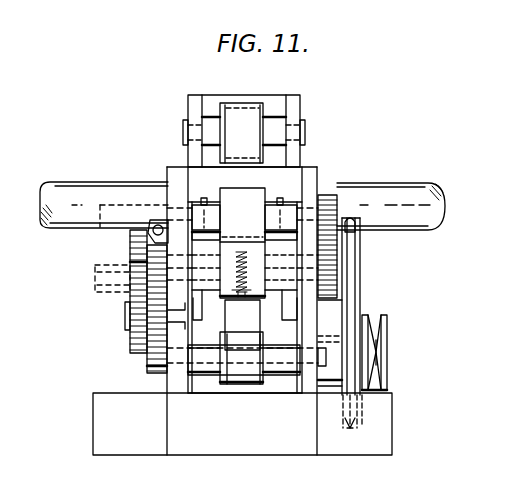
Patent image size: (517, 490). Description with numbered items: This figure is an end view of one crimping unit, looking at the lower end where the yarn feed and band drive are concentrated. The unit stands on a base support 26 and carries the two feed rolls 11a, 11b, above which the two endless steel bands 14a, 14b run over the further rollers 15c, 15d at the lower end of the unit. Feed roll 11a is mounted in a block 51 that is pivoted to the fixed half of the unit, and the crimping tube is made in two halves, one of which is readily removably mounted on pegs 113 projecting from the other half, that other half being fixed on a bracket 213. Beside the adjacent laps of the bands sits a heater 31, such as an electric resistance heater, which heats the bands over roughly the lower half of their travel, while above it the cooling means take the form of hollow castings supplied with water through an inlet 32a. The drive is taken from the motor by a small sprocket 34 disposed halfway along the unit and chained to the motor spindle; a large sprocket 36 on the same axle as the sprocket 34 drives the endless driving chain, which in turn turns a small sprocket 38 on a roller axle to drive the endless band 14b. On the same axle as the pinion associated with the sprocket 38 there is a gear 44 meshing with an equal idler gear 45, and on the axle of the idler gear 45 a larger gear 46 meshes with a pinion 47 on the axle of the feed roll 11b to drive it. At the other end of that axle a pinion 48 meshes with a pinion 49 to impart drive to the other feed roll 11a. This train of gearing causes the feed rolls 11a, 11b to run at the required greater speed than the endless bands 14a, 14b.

The feed roll 11a is at (232, 205).
The feed roll 11b is at (258, 277).
The endless band 14a is at (243, 105).
The endless band 14b is at (233, 383).
The roller 15c is at (260, 103).
The roller 15d is at (265, 376).
The base support 26 is at (303, 330).
The heater 31 is at (280, 302).
The inlet 32a is at (113, 205).
The small sprocket 34 is at (377, 358).
The large sprocket 36 is at (357, 380).
The small sprocket 38 is at (360, 240).
The gear 44 is at (130, 237).
The idler gear 45 is at (130, 347).
The larger gear 46 is at (150, 370).
The pinion 47 is at (130, 262).
The pinion 48 is at (342, 268).
The pinion 49 is at (337, 200).
The block 51 is at (295, 187).
The pegs 113 is at (203, 198).
The bracket 213 is at (168, 320).